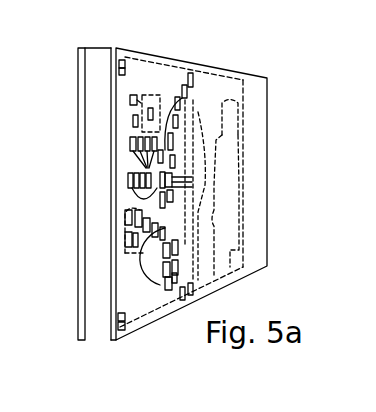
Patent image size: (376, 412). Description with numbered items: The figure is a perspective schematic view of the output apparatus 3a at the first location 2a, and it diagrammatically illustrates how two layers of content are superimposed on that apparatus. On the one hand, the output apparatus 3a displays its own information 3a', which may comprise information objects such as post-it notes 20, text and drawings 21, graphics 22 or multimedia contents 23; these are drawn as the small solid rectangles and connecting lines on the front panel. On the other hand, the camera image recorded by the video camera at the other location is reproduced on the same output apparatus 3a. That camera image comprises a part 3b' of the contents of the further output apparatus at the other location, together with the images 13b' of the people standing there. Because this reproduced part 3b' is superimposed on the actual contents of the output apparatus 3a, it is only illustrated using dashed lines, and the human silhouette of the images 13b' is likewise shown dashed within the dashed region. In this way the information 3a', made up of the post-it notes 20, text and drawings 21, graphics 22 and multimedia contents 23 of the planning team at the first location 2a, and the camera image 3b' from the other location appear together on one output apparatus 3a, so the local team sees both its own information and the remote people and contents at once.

The first location 2a is at (60, 84).
The output apparatus 3a is at (189, 177).
The information displayed on the first output apparatus 3a' is at (180, 172).
The camera image part of the further output apparatus contents 3b' is at (96, 209).
The images of the people 13b' is at (256, 191).
The post-it notes 20 is at (210, 290).
The text and drawings 21 is at (222, 220).
The graphics 22 is at (235, 255).
The multimedia contents 23 is at (265, 271).